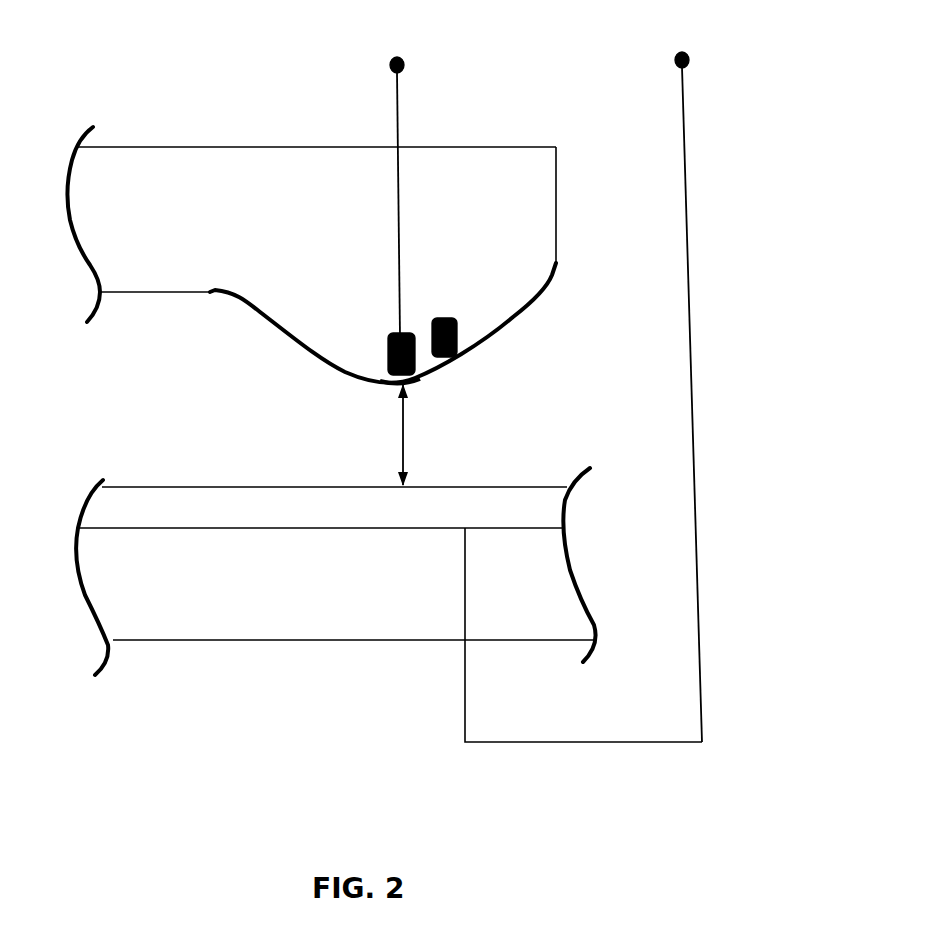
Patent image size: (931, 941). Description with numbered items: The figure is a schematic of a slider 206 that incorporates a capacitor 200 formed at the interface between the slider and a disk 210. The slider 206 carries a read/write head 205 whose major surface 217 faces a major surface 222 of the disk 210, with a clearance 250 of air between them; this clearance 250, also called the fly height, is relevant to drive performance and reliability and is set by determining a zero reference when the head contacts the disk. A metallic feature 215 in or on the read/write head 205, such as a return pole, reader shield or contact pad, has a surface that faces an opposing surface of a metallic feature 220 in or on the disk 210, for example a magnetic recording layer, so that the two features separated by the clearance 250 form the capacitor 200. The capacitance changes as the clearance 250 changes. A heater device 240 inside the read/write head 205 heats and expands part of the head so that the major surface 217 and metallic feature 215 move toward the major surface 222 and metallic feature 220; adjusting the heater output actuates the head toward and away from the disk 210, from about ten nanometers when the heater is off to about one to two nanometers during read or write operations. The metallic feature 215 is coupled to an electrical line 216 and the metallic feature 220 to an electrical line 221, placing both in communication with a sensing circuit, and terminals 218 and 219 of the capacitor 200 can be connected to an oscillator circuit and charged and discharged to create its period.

The capacitor 200 is at (735, 182).
The read/write head 205 is at (510, 302).
The slider 206 is at (328, 259).
The disk 210 is at (389, 568).
The metallic feature 215 is at (457, 313).
The electrical line 216 is at (417, 207).
The major surface 217 is at (368, 387).
The terminal 218 is at (408, 58).
The terminal 219 is at (667, 55).
The metallic feature 220 is at (319, 513).
The electrical line 221 is at (702, 550).
The major surface 222 is at (153, 470).
The heater device 240 is at (382, 343).
The clearance 250 is at (413, 460).